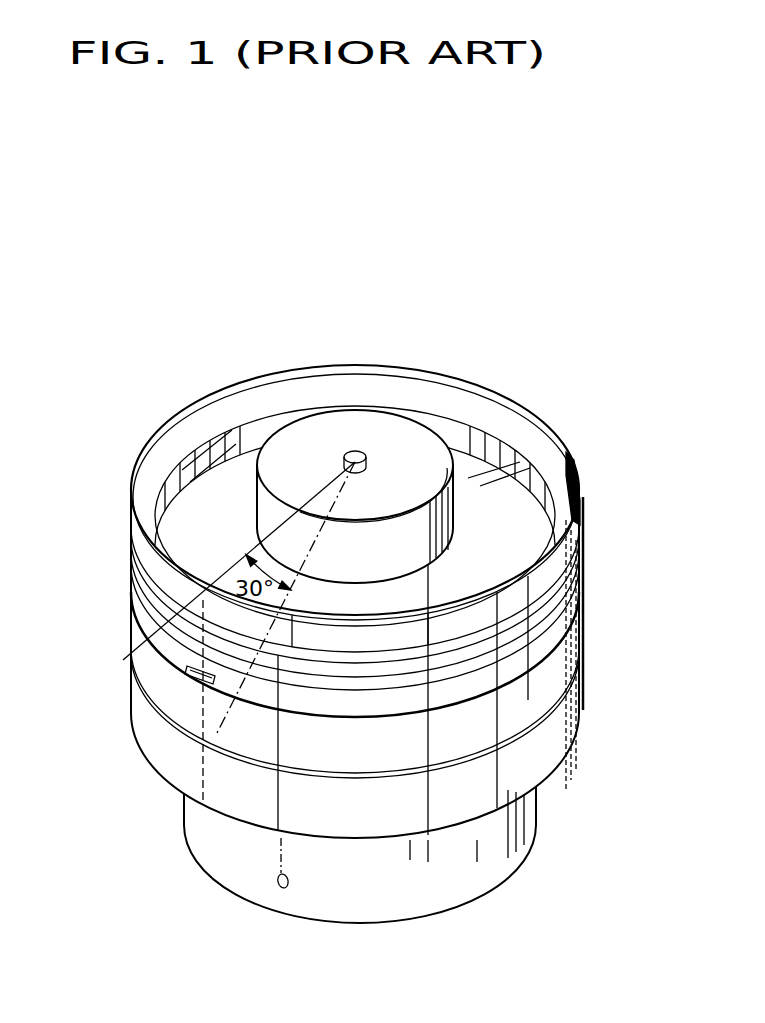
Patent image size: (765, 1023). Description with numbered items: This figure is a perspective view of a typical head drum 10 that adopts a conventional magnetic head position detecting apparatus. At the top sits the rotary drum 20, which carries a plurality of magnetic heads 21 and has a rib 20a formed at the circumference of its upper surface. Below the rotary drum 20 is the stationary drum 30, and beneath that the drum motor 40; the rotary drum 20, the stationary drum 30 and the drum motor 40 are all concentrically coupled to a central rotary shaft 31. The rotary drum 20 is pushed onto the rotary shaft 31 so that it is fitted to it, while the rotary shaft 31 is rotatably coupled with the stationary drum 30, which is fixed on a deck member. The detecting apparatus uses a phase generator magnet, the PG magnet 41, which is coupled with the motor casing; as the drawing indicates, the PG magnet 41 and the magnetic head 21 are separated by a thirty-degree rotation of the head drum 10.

The head drum 10 is at (522, 403).
The rotary drum 20 is at (573, 476).
The rib 20a is at (440, 395).
The magnetic head 21 is at (197, 677).
The stationary drum 30 is at (585, 655).
The rotary shaft 31 is at (358, 456).
The drum motor 40 is at (553, 836).
The PG magnet 41 is at (283, 890).